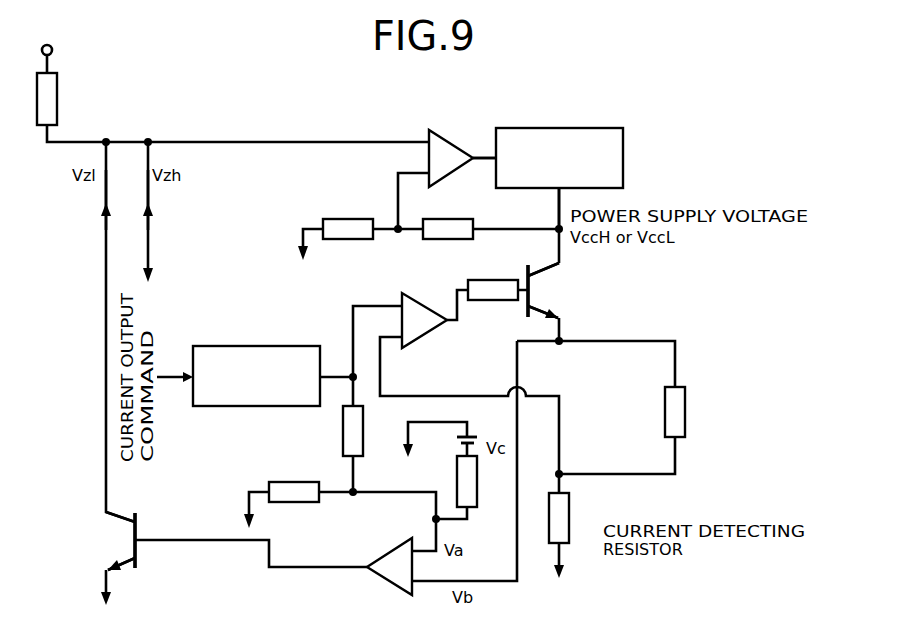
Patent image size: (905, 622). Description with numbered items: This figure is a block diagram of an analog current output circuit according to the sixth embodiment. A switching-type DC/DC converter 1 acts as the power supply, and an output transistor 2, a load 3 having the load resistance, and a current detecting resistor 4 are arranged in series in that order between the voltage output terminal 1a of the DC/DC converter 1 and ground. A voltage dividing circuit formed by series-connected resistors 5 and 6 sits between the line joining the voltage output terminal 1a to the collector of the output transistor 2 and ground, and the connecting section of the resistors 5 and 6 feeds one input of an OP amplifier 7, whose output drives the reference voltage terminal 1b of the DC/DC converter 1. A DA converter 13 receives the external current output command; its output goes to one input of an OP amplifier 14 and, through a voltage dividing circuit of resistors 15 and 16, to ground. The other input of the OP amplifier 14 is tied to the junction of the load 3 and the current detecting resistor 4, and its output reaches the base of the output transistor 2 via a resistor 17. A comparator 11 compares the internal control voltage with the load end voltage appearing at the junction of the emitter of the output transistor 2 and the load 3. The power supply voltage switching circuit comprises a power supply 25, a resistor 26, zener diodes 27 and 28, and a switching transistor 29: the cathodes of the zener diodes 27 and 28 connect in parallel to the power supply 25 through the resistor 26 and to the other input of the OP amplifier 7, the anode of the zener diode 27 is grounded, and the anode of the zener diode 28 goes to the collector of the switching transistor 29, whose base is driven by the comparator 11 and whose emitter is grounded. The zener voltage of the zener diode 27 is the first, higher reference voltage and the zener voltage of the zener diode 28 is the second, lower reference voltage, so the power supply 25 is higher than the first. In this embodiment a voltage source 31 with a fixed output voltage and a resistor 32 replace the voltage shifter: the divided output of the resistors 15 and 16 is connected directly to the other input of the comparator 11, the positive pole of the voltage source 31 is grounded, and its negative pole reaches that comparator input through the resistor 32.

The DC/DC converter 1 is at (605, 128).
The voltage output terminal 1a is at (557, 193).
The reference voltage terminal 1b is at (494, 157).
The output transistor 2 is at (528, 305).
The load 3 is at (686, 412).
The current detecting resistor 4 is at (570, 518).
The resistor 5 is at (458, 219).
The resistor 6 is at (357, 219).
The OP amplifier 7 is at (447, 137).
The comparator 11 is at (377, 560).
The DA converter 13 is at (298, 346).
The OP amplifier 14 is at (413, 297).
The resistor 15 is at (343, 426).
The resistor 16 is at (302, 482).
The resistor 17 is at (505, 280).
The power supply 25 is at (57, 50).
The resistor 26 is at (57, 100).
The zener diode 27 is at (140, 198).
The zener diode 28 is at (113, 198).
The switching transistor 29 is at (137, 526).
The voltage source 31 is at (477, 436).
The resistor 32 is at (477, 500).